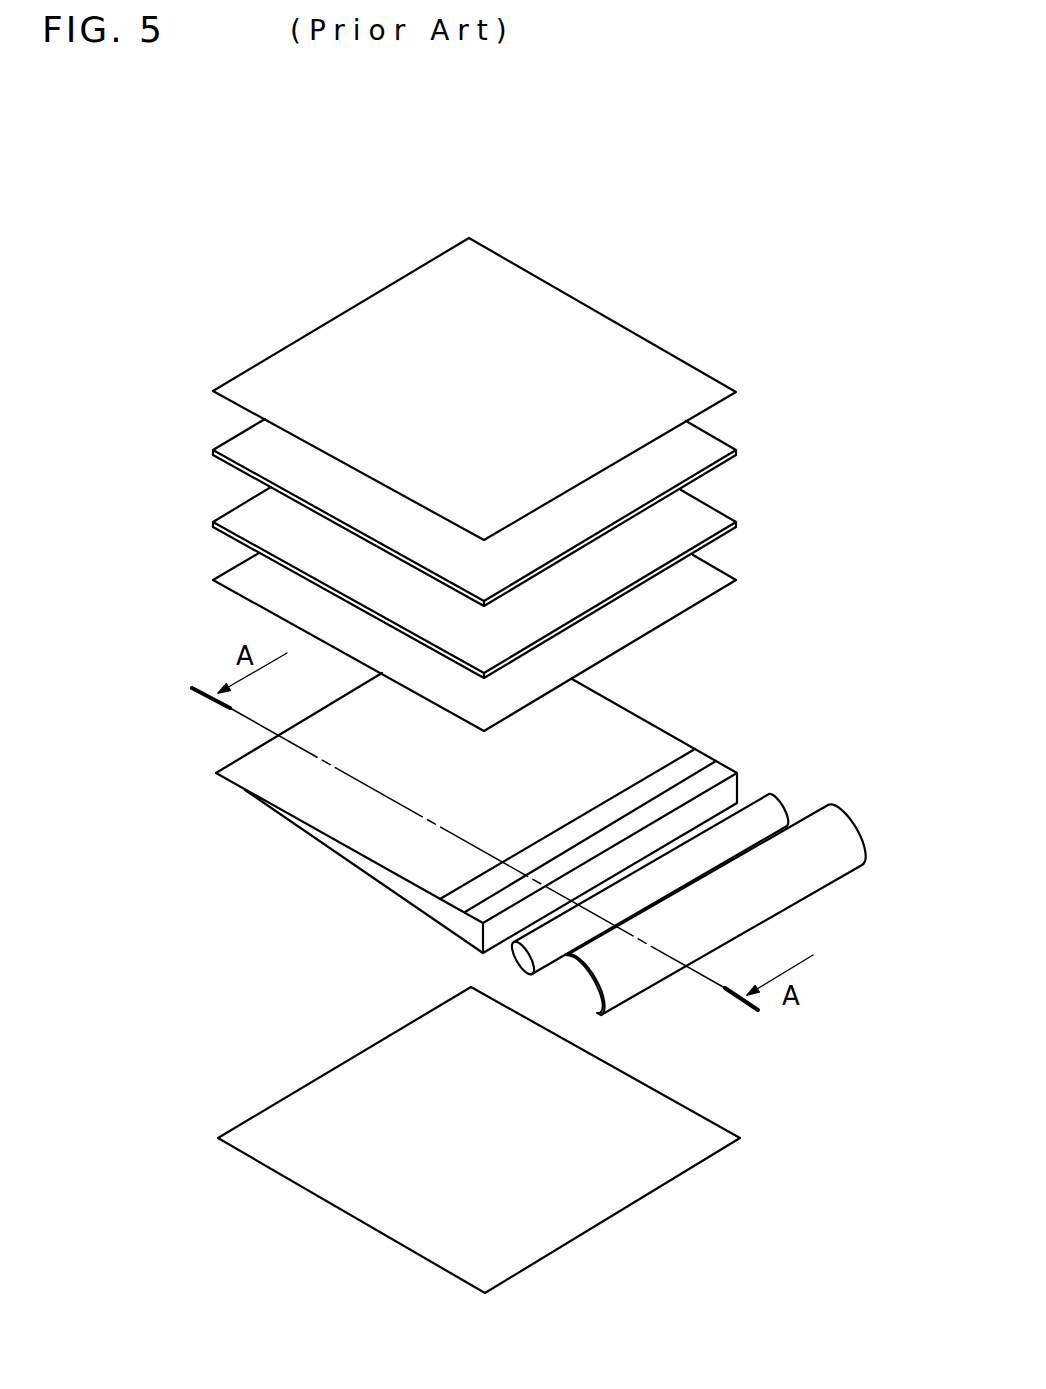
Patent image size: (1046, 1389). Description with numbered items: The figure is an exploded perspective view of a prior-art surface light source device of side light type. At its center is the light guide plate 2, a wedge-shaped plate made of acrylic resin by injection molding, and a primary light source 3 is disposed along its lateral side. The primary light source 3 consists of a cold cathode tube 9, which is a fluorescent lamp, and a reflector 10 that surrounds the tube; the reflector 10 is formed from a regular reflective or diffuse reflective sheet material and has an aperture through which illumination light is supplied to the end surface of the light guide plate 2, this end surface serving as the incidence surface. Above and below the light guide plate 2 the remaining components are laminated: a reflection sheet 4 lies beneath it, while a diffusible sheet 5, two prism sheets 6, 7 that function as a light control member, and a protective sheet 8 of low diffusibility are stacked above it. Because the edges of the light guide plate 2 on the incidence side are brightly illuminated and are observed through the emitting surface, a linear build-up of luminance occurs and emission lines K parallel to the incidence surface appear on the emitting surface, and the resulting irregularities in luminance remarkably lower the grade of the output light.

The light guide plate 2 is at (465, 813).
The primary light source 3 is at (634, 847).
The reflection sheet 4 is at (630, 1104).
The diffusible sheet 5 is at (678, 580).
The prism sheet 6 is at (678, 520).
The prism sheet 7 is at (678, 450).
The protective sheet 8 is at (678, 398).
The cold cathode tube 9 is at (552, 947).
The reflector 10 is at (740, 922).
The emission lines K is at (568, 825).